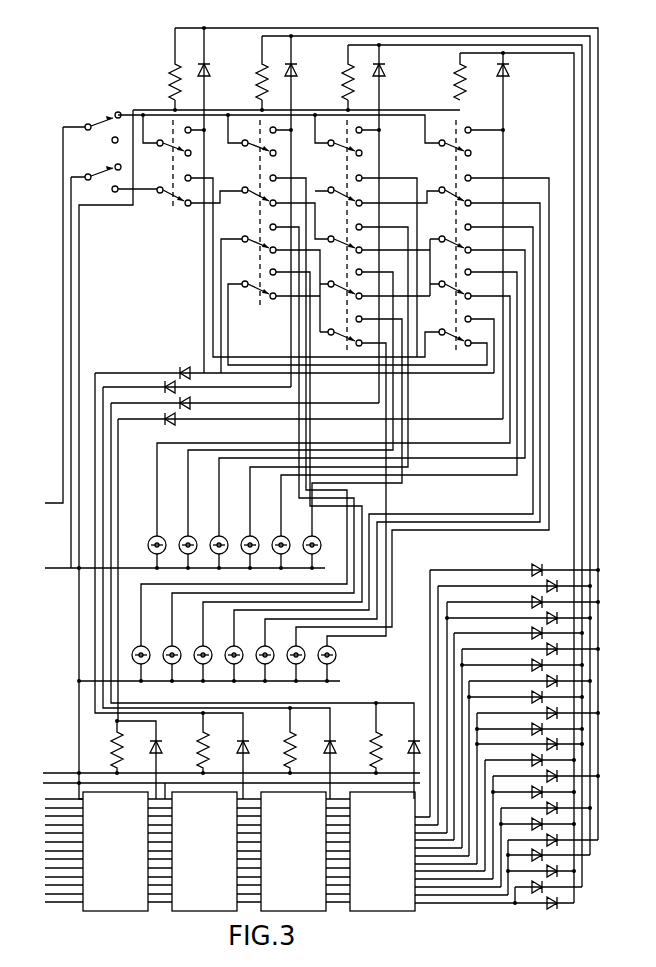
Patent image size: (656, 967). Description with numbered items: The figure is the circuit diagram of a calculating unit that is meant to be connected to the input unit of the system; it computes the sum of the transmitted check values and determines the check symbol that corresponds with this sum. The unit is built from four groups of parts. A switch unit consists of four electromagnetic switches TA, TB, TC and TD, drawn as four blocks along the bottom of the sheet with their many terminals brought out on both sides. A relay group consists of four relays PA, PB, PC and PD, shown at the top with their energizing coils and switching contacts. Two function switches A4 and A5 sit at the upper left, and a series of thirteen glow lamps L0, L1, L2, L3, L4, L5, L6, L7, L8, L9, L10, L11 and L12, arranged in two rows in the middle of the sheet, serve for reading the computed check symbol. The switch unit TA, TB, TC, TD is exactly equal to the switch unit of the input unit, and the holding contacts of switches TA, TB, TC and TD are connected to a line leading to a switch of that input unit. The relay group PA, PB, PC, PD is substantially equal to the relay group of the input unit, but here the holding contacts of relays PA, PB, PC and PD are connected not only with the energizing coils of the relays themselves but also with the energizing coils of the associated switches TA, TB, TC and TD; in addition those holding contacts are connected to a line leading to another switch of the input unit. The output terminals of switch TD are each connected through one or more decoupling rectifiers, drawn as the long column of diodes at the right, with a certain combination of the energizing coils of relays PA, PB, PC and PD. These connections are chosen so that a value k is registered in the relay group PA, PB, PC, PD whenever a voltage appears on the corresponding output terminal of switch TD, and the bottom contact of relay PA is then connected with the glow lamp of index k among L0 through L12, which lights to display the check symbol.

The relay PA is at (162, 64).
The relay PB is at (249, 68).
The relay PC is at (336, 72).
The relay PD is at (447, 76).
The function switch A4 is at (96, 358).
The function switch A5 is at (83, 301).
The glow lamp L0 is at (150, 540).
The glow lamp L1 is at (181, 540).
The glow lamp L2 is at (212, 540).
The glow lamp L3 is at (243, 540).
The glow lamp L4 is at (274, 540).
The glow lamp L5 is at (305, 540).
The glow lamp L6 is at (134, 650).
The glow lamp L7 is at (165, 650).
The glow lamp L8 is at (196, 650).
The glow lamp L9 is at (227, 650).
The glow lamp L10 is at (257, 650).
The glow lamp L11 is at (288, 650).
The glow lamp L12 is at (319, 650).
The electromagnetic switch TA is at (115, 851).
The electromagnetic switch TB is at (204, 851).
The electromagnetic switch TC is at (293, 851).
The electromagnetic switch TD is at (382, 851).